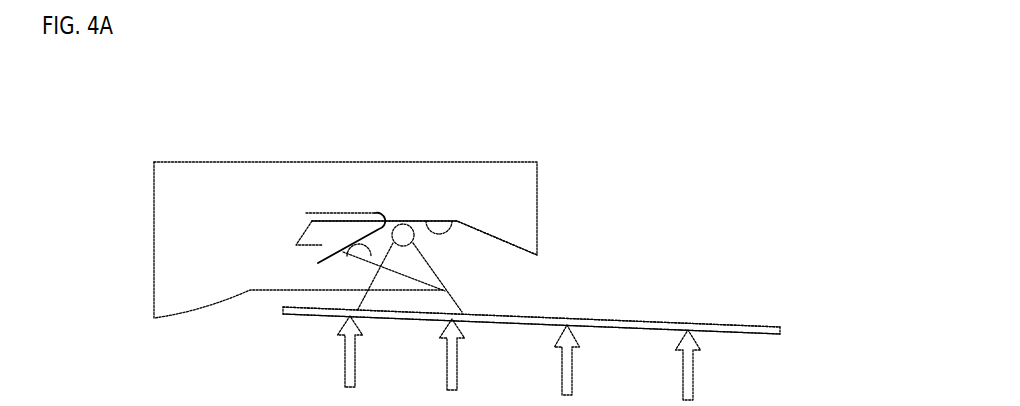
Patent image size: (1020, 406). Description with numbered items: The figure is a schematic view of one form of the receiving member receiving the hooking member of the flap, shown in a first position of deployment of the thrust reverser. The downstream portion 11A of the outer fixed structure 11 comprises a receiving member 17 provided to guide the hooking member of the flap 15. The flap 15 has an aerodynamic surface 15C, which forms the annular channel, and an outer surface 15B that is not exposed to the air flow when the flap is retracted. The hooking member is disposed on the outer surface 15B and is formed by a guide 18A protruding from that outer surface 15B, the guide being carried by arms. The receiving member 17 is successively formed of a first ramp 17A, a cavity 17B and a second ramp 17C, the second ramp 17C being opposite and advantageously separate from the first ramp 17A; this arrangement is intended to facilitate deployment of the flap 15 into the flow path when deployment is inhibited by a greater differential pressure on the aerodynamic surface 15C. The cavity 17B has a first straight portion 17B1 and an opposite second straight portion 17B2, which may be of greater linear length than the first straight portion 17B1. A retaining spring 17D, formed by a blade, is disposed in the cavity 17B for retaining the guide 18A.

The outer fixed structure 11 is at (200, 145).
The downstream portion 11A is at (596, 212).
The flap 15 is at (630, 328).
The outer surface 15B is at (685, 323).
The aerodynamic surface 15C is at (750, 335).
The receiving member 17 is at (481, 300).
The first ramp 17A is at (352, 248).
The cavity 17B is at (329, 220).
The first straight portion 17B1 is at (324, 247).
The second straight portion 17B2 is at (452, 220).
The second ramp 17C is at (466, 218).
The retaining spring 17D is at (368, 216).
The guide 18A is at (452, 251).